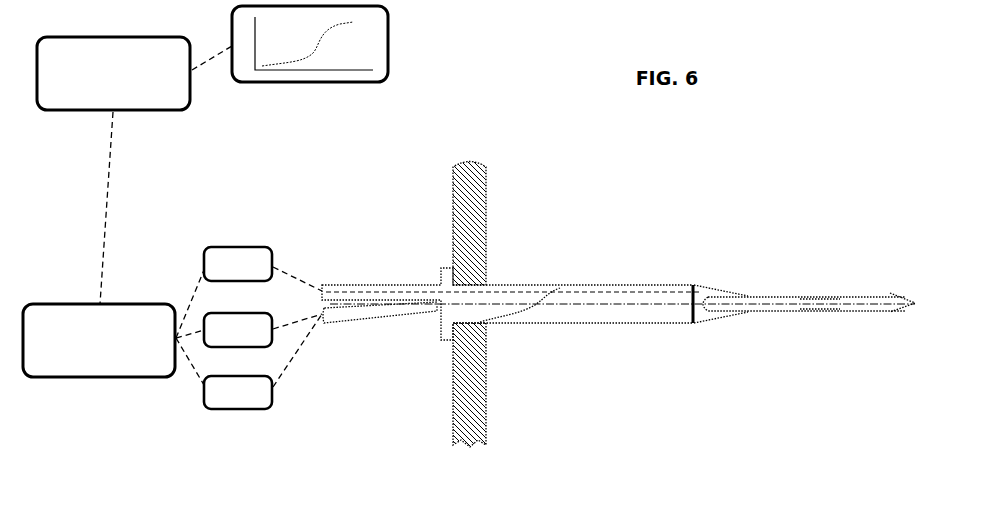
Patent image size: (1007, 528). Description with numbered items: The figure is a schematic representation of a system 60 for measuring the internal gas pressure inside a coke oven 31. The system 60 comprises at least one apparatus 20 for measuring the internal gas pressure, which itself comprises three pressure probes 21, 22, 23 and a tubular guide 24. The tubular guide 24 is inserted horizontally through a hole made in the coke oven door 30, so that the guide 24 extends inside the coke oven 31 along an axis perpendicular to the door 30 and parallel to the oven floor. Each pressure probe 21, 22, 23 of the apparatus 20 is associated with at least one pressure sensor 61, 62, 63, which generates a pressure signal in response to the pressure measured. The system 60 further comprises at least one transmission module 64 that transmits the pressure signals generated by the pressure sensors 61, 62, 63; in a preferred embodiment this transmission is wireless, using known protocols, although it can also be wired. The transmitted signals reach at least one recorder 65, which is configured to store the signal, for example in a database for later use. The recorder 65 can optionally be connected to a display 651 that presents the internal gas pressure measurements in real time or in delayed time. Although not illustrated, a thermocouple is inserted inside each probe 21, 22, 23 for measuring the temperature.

The system 60 is at (510, 90).
The recorder 65 is at (113, 73).
The display 651 is at (310, 56).
The transmission module 64 is at (99, 340).
The pressure sensor 61 is at (238, 264).
The pressure sensor 62 is at (238, 330).
The pressure sensor 63 is at (238, 392).
The coke oven door 30 is at (451, 210).
The coke oven 31 is at (538, 196).
The apparatus 20 is at (712, 249).
The pressure probe 21 is at (852, 313).
The pressure probe 22 is at (880, 290).
The pressure probe 23 is at (808, 313).
The tubular guide 24 is at (572, 372).